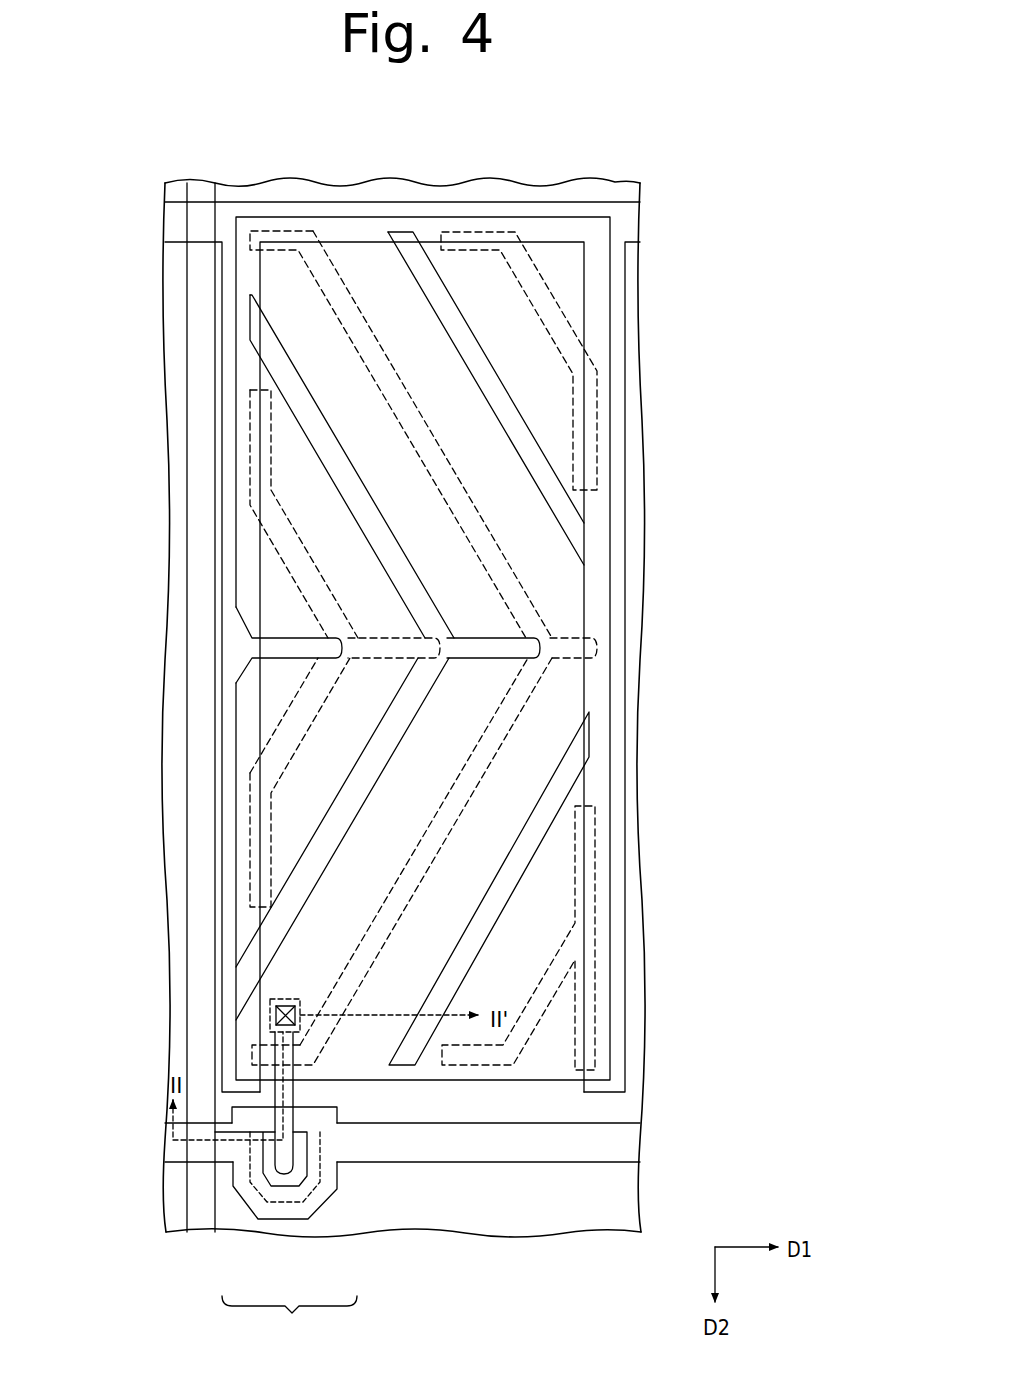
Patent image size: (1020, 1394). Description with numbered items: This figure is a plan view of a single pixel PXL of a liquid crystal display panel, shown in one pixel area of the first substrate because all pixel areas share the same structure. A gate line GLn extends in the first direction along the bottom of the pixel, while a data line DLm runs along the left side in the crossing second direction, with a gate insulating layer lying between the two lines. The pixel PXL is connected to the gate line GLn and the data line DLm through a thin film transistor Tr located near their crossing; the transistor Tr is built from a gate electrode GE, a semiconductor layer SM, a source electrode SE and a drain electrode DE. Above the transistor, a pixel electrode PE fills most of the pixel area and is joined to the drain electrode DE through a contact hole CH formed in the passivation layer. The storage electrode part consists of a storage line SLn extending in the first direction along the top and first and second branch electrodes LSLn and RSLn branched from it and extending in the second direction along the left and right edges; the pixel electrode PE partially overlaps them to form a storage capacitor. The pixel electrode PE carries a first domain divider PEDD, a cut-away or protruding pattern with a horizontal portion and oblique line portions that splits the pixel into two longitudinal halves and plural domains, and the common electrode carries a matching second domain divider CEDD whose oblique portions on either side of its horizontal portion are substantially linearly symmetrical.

The pixel PXL is at (495, 198).
The storage line SLn is at (625, 223).
The first branch electrode LSLn is at (186, 221).
The second branch electrode RSLn is at (625, 516).
The data line DLm is at (200, 638).
The gate line GLn is at (625, 1142).
The pixel electrode PE is at (610, 612).
The first domain divider PEDD is at (556, 748).
The second domain divider CEDD is at (596, 873).
The contact hole CH is at (270, 1015).
The drain electrode DE is at (258, 1214).
The source electrode SE is at (272, 1196).
The semiconductor layer SM is at (300, 1206).
The gate electrode GE is at (330, 1216).
The thin film transistor Tr is at (289, 1319).